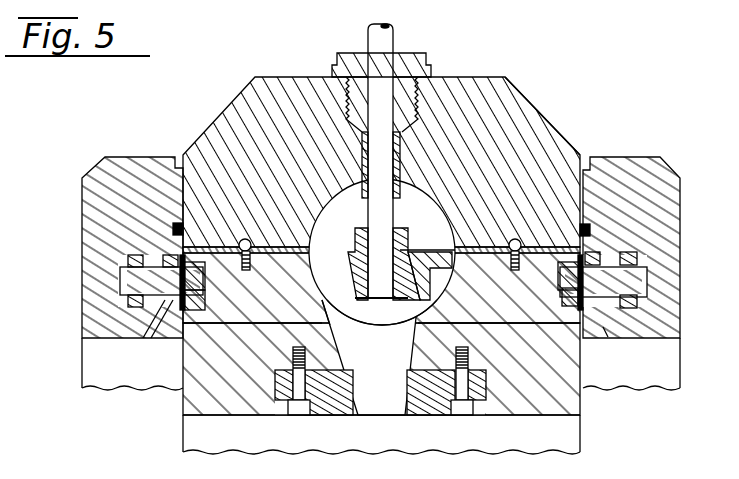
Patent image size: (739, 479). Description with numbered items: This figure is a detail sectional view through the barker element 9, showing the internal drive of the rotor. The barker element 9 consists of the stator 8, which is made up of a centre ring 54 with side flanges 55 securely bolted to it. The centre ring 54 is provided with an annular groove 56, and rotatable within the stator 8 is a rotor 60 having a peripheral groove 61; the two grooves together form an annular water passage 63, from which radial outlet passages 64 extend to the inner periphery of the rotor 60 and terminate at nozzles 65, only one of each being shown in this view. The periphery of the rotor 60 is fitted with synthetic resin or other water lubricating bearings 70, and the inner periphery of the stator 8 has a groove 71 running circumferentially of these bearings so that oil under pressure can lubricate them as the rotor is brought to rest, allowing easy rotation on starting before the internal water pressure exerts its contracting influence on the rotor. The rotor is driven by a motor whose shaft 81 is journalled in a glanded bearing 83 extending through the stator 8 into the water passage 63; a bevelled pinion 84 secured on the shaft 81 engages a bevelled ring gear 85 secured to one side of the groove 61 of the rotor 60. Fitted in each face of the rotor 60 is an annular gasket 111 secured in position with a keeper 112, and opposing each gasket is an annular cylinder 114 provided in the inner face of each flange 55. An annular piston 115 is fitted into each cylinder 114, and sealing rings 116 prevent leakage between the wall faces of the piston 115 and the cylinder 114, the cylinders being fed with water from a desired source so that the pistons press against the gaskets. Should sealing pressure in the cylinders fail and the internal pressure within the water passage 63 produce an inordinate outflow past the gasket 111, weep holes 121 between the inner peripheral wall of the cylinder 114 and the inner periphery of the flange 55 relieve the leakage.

The stator 8 is at (240, 104).
The barker element 9 is at (536, 110).
The centre ring 54 is at (515, 95).
The side flanges 55 is at (103, 208).
The annular groove 56 is at (336, 205).
The rotor 60 is at (519, 406).
The peripheral groove 61 is at (322, 272).
The annular water passage 63 is at (414, 210).
The radial outlet passages 64 is at (360, 353).
The nozzles 65 is at (418, 407).
The water lubricating bearings 70 is at (287, 257).
The groove 71 is at (250, 240).
The shaft 81 is at (398, 38).
The glanded bearing 83 is at (400, 145).
The bevelled pinion 84 is at (382, 320).
The bevelled ring gear 85 is at (424, 296).
The annular gasket 111 is at (203, 278).
The keeper 112 is at (205, 300).
The annular cylinder 114 is at (120, 262).
The annular piston 115 is at (163, 260).
The sealing rings 116 is at (128, 260).
The weep holes 121 is at (153, 338).